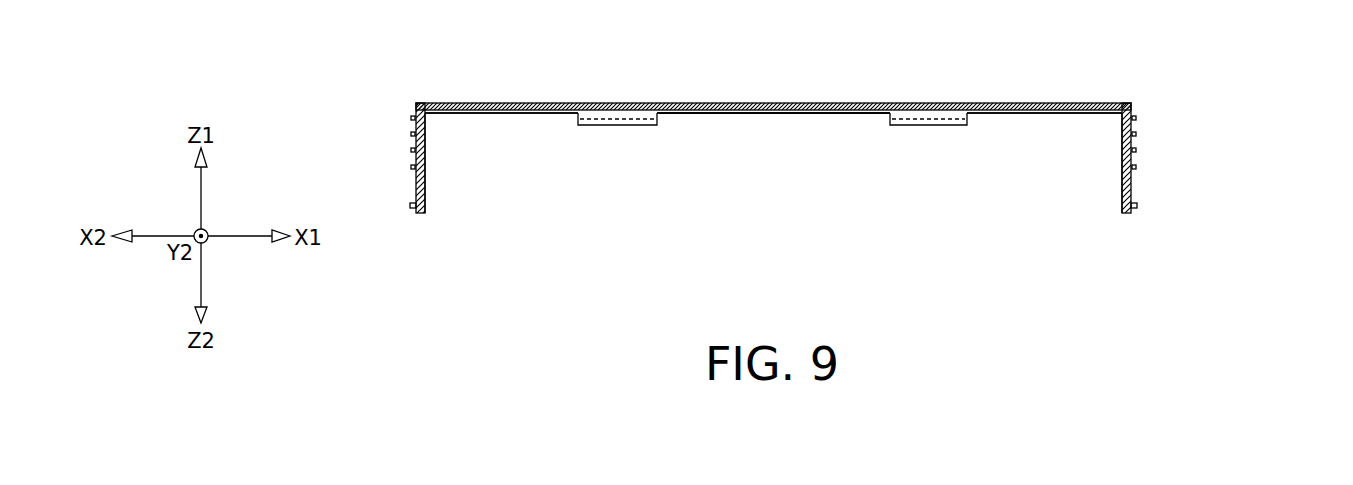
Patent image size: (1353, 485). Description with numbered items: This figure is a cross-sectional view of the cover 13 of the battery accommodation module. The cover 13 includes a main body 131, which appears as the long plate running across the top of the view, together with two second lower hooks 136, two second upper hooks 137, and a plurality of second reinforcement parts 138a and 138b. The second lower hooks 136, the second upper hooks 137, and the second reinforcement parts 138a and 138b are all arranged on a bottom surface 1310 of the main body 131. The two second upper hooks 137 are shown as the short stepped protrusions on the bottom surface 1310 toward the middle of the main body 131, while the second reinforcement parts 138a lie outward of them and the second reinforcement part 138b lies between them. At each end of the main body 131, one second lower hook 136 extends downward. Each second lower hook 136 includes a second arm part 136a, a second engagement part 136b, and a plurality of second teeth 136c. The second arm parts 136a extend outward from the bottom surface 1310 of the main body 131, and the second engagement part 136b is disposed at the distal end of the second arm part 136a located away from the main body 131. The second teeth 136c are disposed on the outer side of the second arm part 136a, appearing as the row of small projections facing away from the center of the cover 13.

The cover 13 is at (1325, 56).
The main body 131 is at (855, 105).
The bottom surface 1310 is at (798, 118).
The second lower hook 136 is at (440, 192).
The second arm part 136a is at (427, 156).
The second engagement part 136b is at (410, 205).
The second teeth 136c is at (413, 167).
The second upper hook 137 is at (624, 130).
The second reinforcement part 138a is at (522, 115).
The second reinforcement part 138b is at (720, 114).